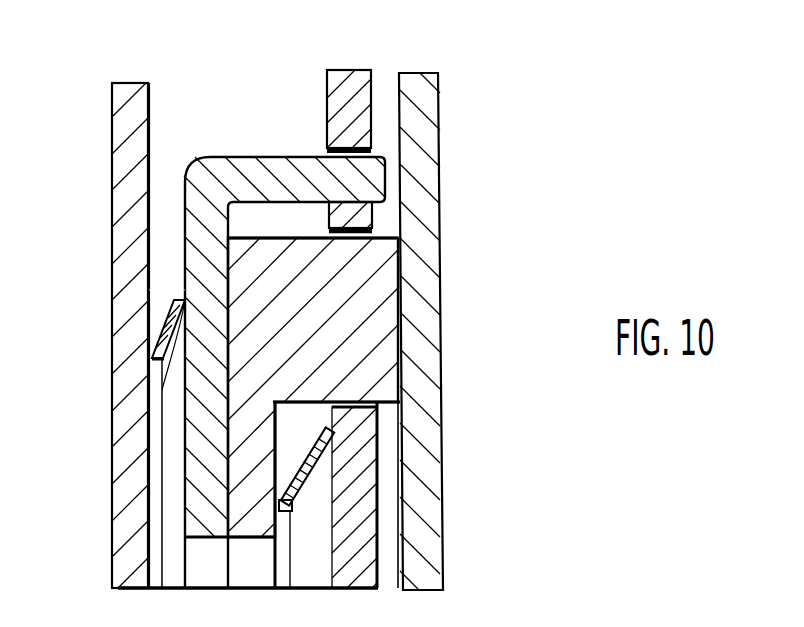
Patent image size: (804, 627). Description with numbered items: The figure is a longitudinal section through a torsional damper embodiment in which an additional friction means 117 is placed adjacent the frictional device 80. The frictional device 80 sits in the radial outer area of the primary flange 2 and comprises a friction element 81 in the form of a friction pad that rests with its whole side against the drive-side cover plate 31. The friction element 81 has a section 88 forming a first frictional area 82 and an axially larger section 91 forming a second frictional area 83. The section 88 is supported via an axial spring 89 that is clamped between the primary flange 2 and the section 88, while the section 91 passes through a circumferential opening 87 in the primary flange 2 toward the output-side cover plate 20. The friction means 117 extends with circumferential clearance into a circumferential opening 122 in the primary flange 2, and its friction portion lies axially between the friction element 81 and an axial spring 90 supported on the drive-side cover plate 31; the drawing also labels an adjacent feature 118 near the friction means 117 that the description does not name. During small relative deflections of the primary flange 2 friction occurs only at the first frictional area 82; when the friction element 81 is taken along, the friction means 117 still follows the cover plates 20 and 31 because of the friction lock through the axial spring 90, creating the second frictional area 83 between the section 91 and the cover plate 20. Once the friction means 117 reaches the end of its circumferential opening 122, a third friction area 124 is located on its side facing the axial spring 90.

The primary flange 2 is at (347, 92).
The output-side cover plate 20 is at (422, 123).
The drive-side cover plate 31 is at (122, 133).
The frictional device 80 is at (218, 148).
The friction element 81 is at (253, 262).
The first frictional area 82 is at (372, 516).
The second frictional area 83 is at (397, 312).
The circumferential opening 87 is at (380, 390).
The section 88 is at (262, 440).
The axial spring 89 is at (305, 465).
The axial spring 90 is at (170, 323).
The section 91 is at (370, 258).
The friction means 117 is at (208, 418).
The gap 118 is at (183, 295).
The circumferential opening 122 is at (352, 198).
The third friction area 124 is at (165, 380).